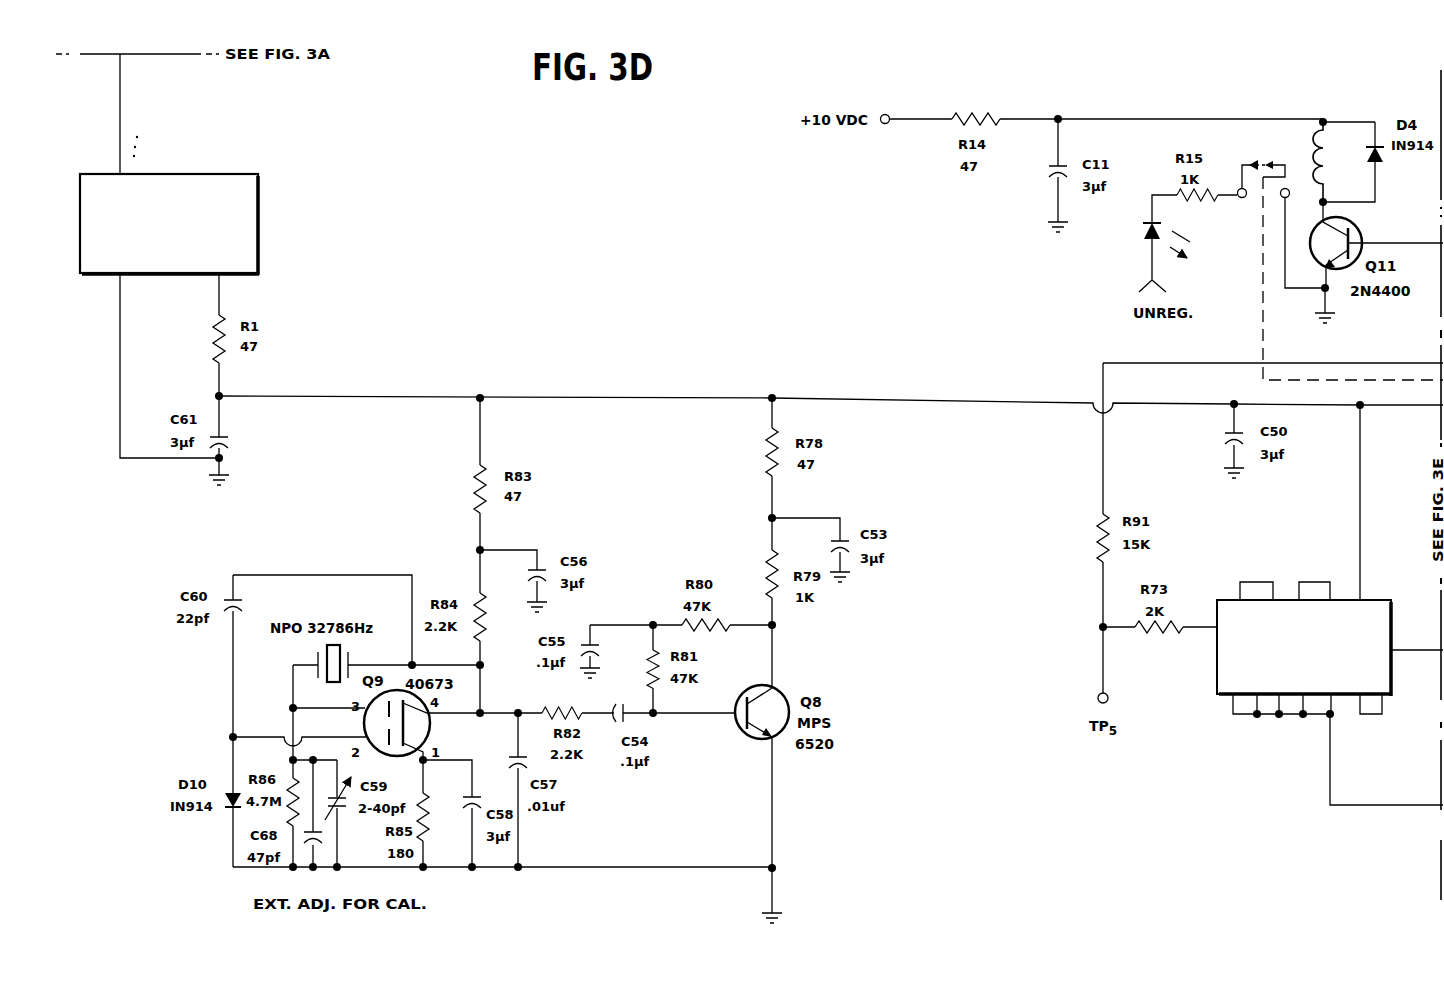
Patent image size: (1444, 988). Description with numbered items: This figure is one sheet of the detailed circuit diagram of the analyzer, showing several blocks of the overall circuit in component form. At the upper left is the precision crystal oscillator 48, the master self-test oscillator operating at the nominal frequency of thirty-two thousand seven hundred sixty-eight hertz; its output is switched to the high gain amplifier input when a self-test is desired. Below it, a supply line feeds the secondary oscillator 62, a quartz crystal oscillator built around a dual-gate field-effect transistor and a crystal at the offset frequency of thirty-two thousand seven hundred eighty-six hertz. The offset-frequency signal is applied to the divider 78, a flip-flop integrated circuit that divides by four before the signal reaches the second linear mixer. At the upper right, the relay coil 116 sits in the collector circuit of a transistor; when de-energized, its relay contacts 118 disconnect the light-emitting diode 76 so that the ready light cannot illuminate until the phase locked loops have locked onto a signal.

The precision crystal oscillator 48 is at (243, 211).
The secondary oscillator 62 is at (540, 378).
The light-emitting diode 76 is at (1146, 243).
The divider 78 is at (1263, 734).
The relay coil 116 is at (1311, 130).
The relay contacts 118 is at (1252, 161).